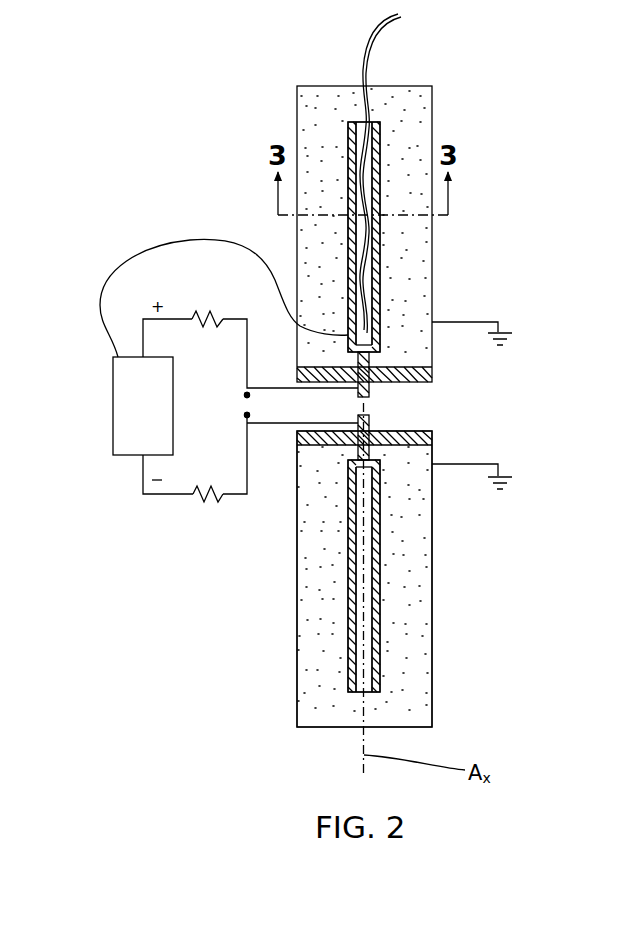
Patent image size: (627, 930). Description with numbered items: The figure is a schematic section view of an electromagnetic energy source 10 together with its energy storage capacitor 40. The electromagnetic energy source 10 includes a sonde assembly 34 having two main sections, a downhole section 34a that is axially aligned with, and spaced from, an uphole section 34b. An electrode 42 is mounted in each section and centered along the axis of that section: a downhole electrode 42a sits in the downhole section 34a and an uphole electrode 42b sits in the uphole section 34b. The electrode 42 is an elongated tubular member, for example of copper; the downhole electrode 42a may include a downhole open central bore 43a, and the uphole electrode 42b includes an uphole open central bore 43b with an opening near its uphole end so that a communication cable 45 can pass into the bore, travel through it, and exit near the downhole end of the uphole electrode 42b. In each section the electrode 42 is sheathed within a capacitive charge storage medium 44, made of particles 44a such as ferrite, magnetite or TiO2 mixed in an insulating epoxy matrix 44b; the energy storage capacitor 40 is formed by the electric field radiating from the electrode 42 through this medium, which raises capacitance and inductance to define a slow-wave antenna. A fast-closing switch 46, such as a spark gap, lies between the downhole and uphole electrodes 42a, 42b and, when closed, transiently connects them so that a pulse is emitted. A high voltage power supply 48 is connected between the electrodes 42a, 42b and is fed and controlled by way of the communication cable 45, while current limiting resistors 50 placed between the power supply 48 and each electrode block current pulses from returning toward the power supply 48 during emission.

The electromagnetic energy source 10 is at (200, 192).
The sonde assembly 34 is at (310, 55).
The downhole section 34a is at (497, 628).
The uphole section 34b is at (463, 188).
The energy storage capacitor 40 is at (258, 563).
The electrode 42 is at (375, 120).
The downhole electrode 42a is at (380, 668).
The uphole electrode 42b is at (380, 145).
The downhole open central bore 43a is at (372, 678).
The uphole open central bore 43b is at (355, 190).
The capacitive charge storage medium 44 is at (322, 675).
The particles 44a is at (400, 287).
The epoxy matrix 44b is at (395, 240).
The communication cable 45 is at (135, 250).
The fast-closing switch 46 is at (248, 407).
The high voltage power supply 48 is at (113, 383).
The current limiting resistors 50 is at (197, 500).